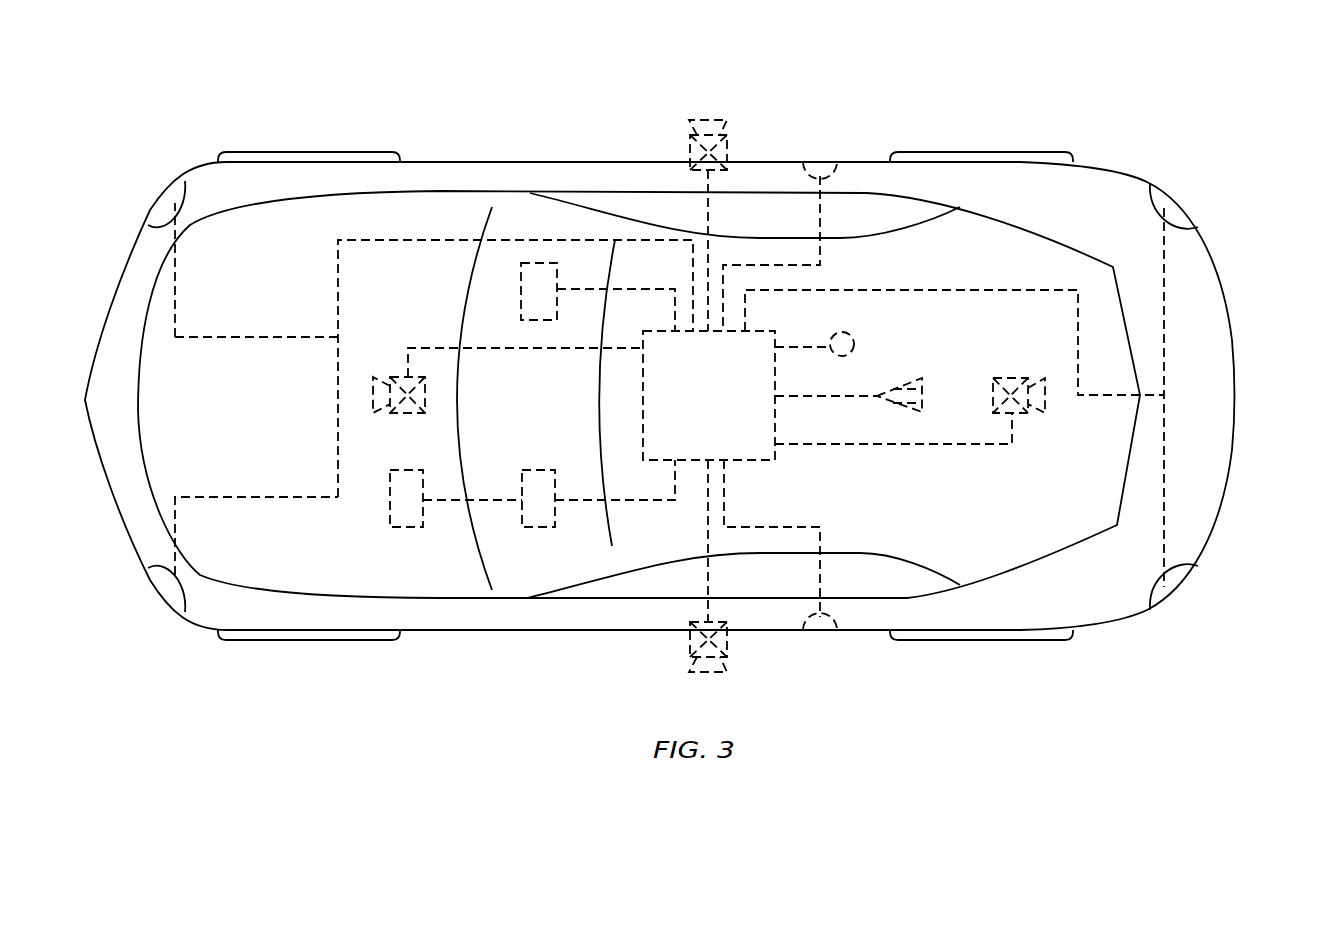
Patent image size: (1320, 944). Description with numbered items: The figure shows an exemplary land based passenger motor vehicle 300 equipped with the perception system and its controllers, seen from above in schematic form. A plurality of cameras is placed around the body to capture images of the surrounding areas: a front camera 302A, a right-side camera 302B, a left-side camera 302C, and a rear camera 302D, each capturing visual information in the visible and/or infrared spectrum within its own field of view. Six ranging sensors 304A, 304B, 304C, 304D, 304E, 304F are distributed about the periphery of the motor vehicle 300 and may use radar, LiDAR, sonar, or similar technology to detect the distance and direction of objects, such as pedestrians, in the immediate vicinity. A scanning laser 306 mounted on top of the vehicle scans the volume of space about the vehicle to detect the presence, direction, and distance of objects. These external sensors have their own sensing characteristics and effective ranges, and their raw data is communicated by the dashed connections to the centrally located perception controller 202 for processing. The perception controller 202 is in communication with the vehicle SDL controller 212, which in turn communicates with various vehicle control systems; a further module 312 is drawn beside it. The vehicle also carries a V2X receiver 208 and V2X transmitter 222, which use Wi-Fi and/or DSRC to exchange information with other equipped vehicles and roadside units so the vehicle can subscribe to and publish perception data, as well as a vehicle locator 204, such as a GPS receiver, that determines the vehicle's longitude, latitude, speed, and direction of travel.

The motor vehicle 300 is at (1108, 132).
The perception controller 202 is at (722, 404).
The vehicle locator 204 is at (540, 263).
The vehicle SDL controller 212 is at (540, 527).
The display module 312 is at (407, 527).
The V2X receiver 208 is at (876, 460).
The V2X transmitter 222 is at (905, 402).
The front camera 302A is at (407, 396).
The right-side camera 302B is at (690, 140).
The left-side camera 302C is at (690, 648).
The rear camera 302D is at (1012, 395).
The ranging sensor 304A is at (175, 590).
The ranging sensor 304B is at (175, 203).
The ranging sensor 304C is at (823, 156).
The ranging sensor 304D is at (1170, 207).
The ranging sensor 304E is at (1170, 588).
The ranging sensor 304F is at (822, 645).
The scanning laser 306 is at (842, 343).